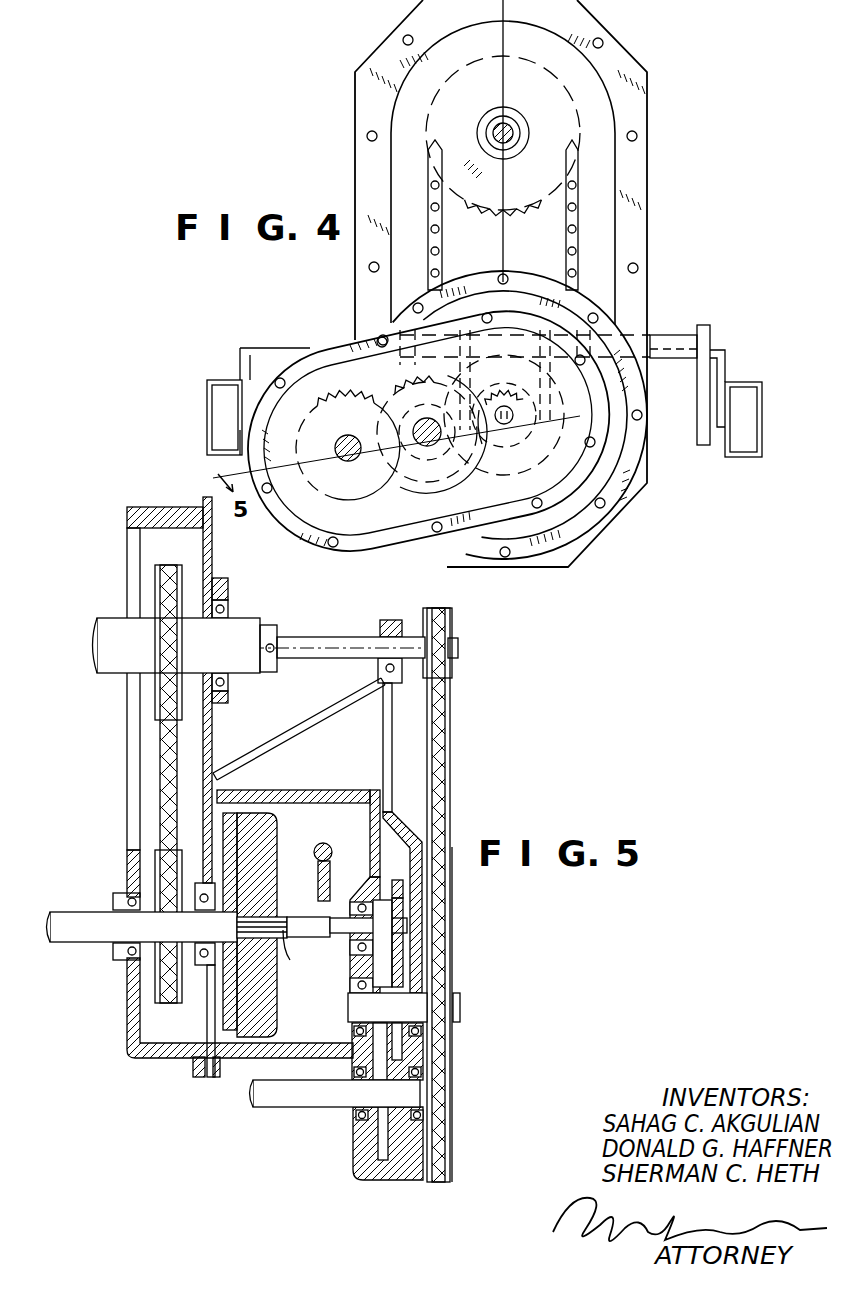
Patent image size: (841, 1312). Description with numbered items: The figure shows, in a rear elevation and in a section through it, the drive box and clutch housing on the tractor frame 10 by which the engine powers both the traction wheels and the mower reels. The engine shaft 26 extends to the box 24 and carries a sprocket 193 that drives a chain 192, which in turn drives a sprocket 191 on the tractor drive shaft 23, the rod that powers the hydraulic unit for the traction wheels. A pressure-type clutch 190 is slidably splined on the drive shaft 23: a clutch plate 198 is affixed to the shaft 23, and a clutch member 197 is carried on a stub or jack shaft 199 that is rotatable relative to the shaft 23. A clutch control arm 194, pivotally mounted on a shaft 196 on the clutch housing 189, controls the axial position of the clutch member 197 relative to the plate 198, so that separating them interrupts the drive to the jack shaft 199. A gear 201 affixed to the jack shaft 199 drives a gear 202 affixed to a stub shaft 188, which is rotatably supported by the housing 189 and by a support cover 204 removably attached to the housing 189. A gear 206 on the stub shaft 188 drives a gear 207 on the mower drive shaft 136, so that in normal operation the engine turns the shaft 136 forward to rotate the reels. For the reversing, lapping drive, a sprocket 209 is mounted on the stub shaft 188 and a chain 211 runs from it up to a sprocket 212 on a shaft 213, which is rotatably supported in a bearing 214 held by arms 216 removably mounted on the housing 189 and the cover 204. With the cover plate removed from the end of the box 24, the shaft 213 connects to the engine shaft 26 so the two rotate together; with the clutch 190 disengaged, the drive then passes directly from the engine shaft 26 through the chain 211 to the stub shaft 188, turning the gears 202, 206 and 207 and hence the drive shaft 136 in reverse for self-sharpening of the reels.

In FIG. 4, the tractor frame 10 is at (747, 402).
In FIG. 5, the tractor drive shaft 23 is at (105, 910).
In FIG. 4, the box 24 is at (650, 222).
In FIG. 5, the box 24 is at (153, 510).
In FIG. 4, the engine shaft 26 is at (512, 130).
In FIG. 5, the engine shaft 26 is at (113, 670).
In FIG. 4, the mower drive shaft 136 is at (362, 461).
In FIG. 5, the mower drive shaft 136 is at (294, 1112).
In FIG. 4, the stub shaft 188 is at (412, 410).
In FIG. 5, the stub shaft 188 is at (460, 1010).
In FIG. 4, the clutch housing 189 is at (603, 490).
In FIG. 5, the clutch housing 189 is at (353, 793).
In FIG. 5, the pressure-type clutch 190 is at (263, 810).
In FIG. 5, the sprocket 191 is at (153, 847).
In FIG. 4, the chain 192 is at (436, 234).
In FIG. 5, the chain 192 is at (158, 770).
In FIG. 4, the sprocket 193 is at (519, 196).
In FIG. 5, the sprocket 193 is at (155, 712).
In FIG. 4, the clutch control arm 194 is at (505, 415).
In FIG. 5, the clutch control arm 194 is at (340, 880).
In FIG. 4, the shaft 196 is at (679, 335).
In FIG. 5, the shaft 196 is at (315, 845).
In FIG. 5, the clutch member 197 is at (267, 990).
In FIG. 5, the clutch plate 198 is at (227, 1003).
In FIG. 4, the stub or jack shaft 199 is at (502, 436).
In FIG. 5, the stub or jack shaft 199 is at (290, 952).
In FIG. 4, the gear 201 is at (513, 404).
In FIG. 5, the gear 201 is at (397, 897).
In FIG. 4, the gear 202 is at (446, 490).
In FIG. 5, the gear 202 is at (397, 963).
In FIG. 4, the support cover 204 is at (347, 346).
In FIG. 5, the support cover 204 is at (418, 828).
In FIG. 4, the gear 206 is at (458, 476).
In FIG. 5, the gear 206 is at (310, 1028).
In FIG. 4, the gear 207 is at (322, 474).
In FIG. 5, the gear 207 is at (387, 1085).
In FIG. 5, the sprocket 209 is at (452, 885).
In FIG. 5, the chain 211 is at (448, 763).
In FIG. 5, the sprocket 212 is at (452, 672).
In FIG. 5, the shaft 213 is at (337, 640).
In FIG. 5, the bearing 214 is at (402, 620).
In FIG. 5, the arms 216 is at (360, 697).